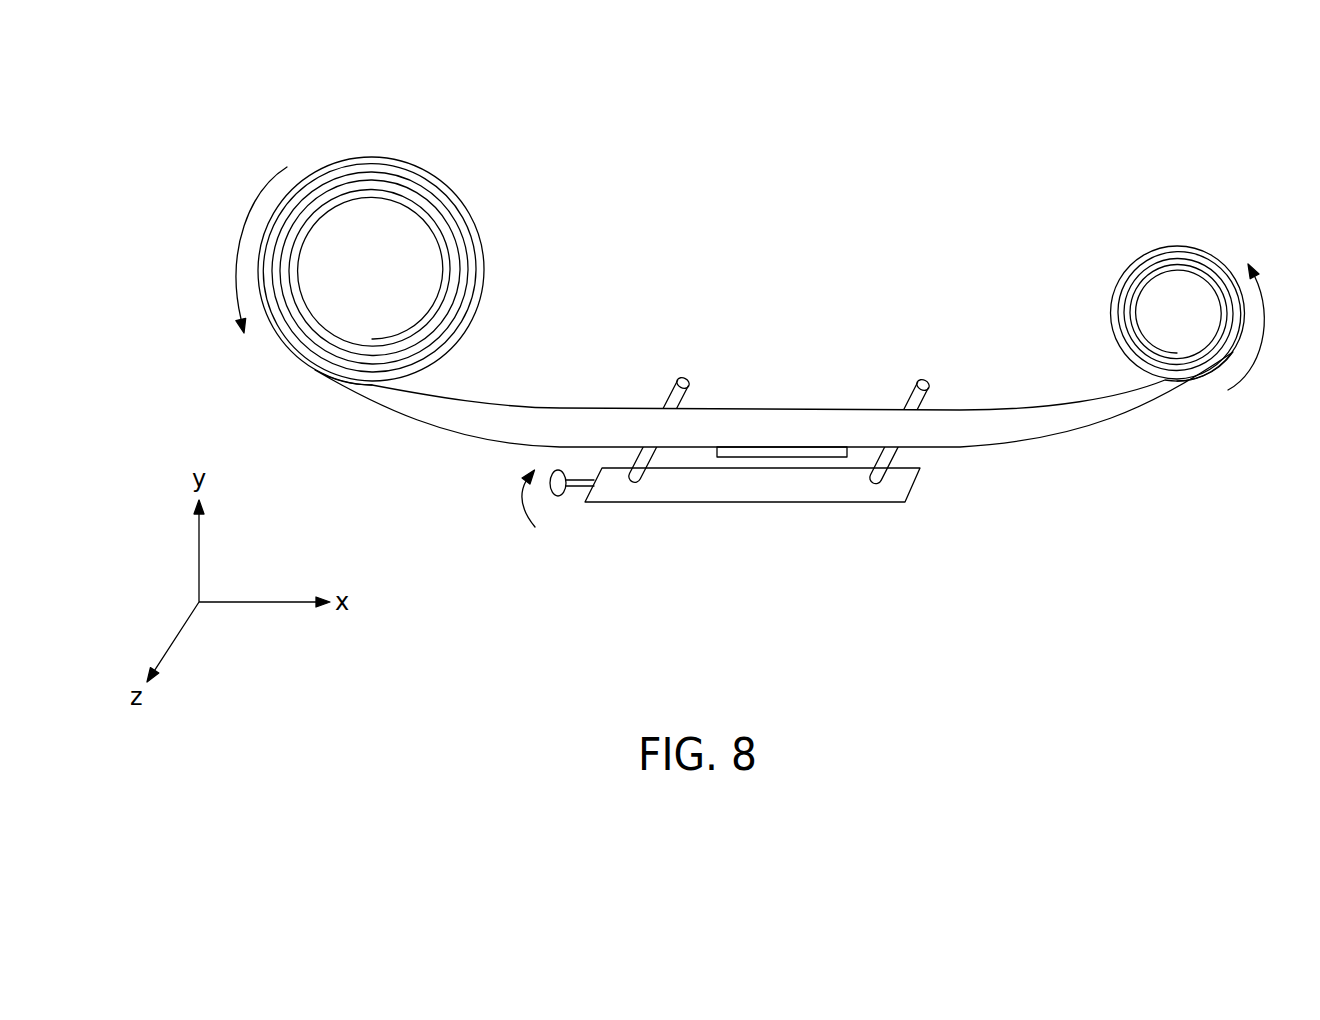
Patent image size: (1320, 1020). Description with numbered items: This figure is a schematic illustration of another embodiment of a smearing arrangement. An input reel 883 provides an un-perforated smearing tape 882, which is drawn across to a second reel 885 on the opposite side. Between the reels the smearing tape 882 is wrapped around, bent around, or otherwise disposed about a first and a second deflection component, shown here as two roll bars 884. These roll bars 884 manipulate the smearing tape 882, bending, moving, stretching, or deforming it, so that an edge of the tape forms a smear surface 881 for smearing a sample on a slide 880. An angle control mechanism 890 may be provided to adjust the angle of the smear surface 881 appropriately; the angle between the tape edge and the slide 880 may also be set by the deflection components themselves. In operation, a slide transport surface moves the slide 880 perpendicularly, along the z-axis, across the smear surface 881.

The slide 880 is at (790, 457).
The smear surface 881 is at (772, 447).
The smearing tape 882 is at (982, 430).
The input reel 883 is at (413, 162).
The roll bars 884 is at (684, 378).
The take-up reel 885 is at (1192, 248).
The angle control mechanism 890 is at (575, 525).